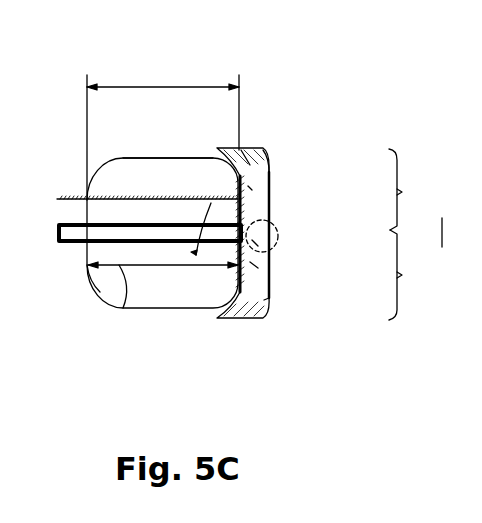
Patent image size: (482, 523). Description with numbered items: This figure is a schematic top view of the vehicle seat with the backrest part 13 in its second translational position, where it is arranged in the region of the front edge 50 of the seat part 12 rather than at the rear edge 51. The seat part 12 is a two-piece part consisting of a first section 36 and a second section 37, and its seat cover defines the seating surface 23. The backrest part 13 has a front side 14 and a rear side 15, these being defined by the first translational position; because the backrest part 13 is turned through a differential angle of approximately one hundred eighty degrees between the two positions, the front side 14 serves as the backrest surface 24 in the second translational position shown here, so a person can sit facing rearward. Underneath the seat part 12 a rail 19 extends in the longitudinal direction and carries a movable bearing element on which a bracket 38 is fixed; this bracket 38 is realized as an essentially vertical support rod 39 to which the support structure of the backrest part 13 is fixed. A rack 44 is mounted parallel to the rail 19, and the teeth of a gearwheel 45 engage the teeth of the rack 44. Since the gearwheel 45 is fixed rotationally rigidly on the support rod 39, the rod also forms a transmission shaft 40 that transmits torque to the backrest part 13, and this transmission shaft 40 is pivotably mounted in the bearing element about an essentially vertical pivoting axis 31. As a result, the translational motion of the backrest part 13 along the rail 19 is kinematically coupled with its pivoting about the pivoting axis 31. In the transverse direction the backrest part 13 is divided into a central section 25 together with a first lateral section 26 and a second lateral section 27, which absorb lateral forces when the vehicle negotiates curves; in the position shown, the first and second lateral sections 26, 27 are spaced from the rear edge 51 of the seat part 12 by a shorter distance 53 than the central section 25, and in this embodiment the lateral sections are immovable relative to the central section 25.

The seat part 12 is at (166, 312).
The backrest part 13 is at (265, 150).
The front side 14 is at (197, 235).
The backrest surface 24 is at (237, 274).
The rear side 15 is at (272, 172).
The rail 19 is at (57, 233).
The seating surface 23 is at (163, 173).
The central section 25 is at (256, 265).
The first lateral section 26 is at (264, 303).
The second lateral section 27 is at (248, 160).
The pivoting axis 31 is at (280, 230).
The first section 36 is at (415, 269).
The second section 37 is at (410, 189).
The bracket 38 is at (322, 246).
The support rod 39 is at (322, 246).
The transmission shaft 40 is at (262, 244).
The rack 44 is at (72, 196).
The gearwheel 45 is at (250, 222).
The front edge 50 is at (85, 264).
The rear edge 51 is at (248, 188).
The distance 53 is at (163, 84).